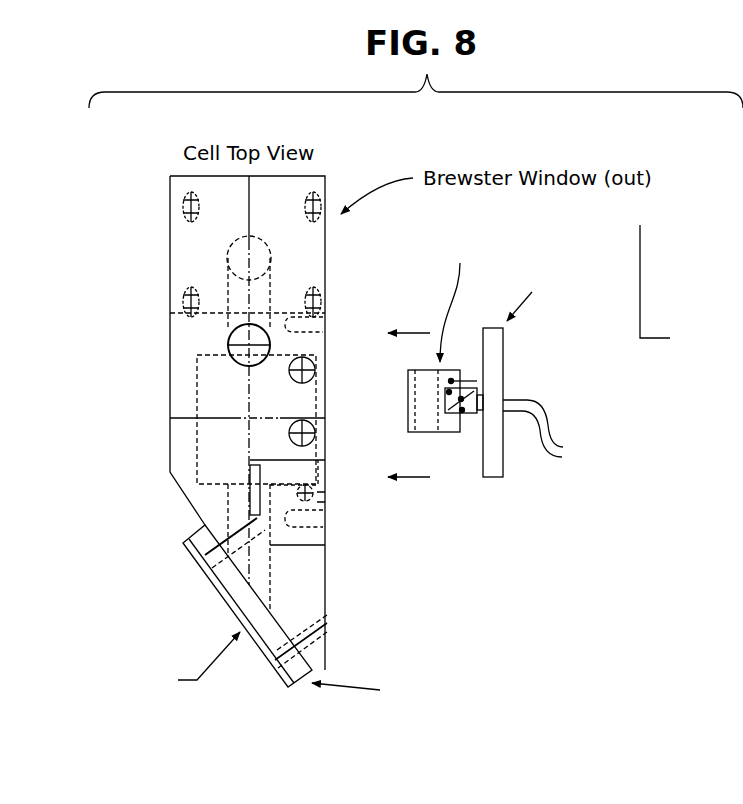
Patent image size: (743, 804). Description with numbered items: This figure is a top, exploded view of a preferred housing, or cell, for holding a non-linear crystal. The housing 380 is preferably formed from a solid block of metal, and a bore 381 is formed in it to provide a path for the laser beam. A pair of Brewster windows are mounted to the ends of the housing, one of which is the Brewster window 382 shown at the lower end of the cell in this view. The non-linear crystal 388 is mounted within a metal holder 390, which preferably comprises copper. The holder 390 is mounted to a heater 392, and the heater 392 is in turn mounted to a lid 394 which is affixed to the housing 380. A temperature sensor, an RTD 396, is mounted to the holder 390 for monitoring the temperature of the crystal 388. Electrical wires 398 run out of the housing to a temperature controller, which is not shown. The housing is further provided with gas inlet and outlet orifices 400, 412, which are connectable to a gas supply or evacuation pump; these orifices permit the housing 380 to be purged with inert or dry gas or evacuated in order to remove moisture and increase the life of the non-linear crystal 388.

The housing (cell) 380 is at (138, 434).
The bore 381 is at (240, 253).
The Brewster window 382 is at (289, 690).
The non-linear crystal 388 is at (427, 413).
The holder 390 is at (657, 267).
The heater 392 is at (470, 437).
The lid 394 is at (497, 477).
The temperature sensor (RTD) 396 is at (458, 362).
The electrical wires 398 is at (558, 398).
The gas inlet and outlet orifice 400 is at (315, 434).
The gas inlet and outlet orifice 412 is at (315, 372).